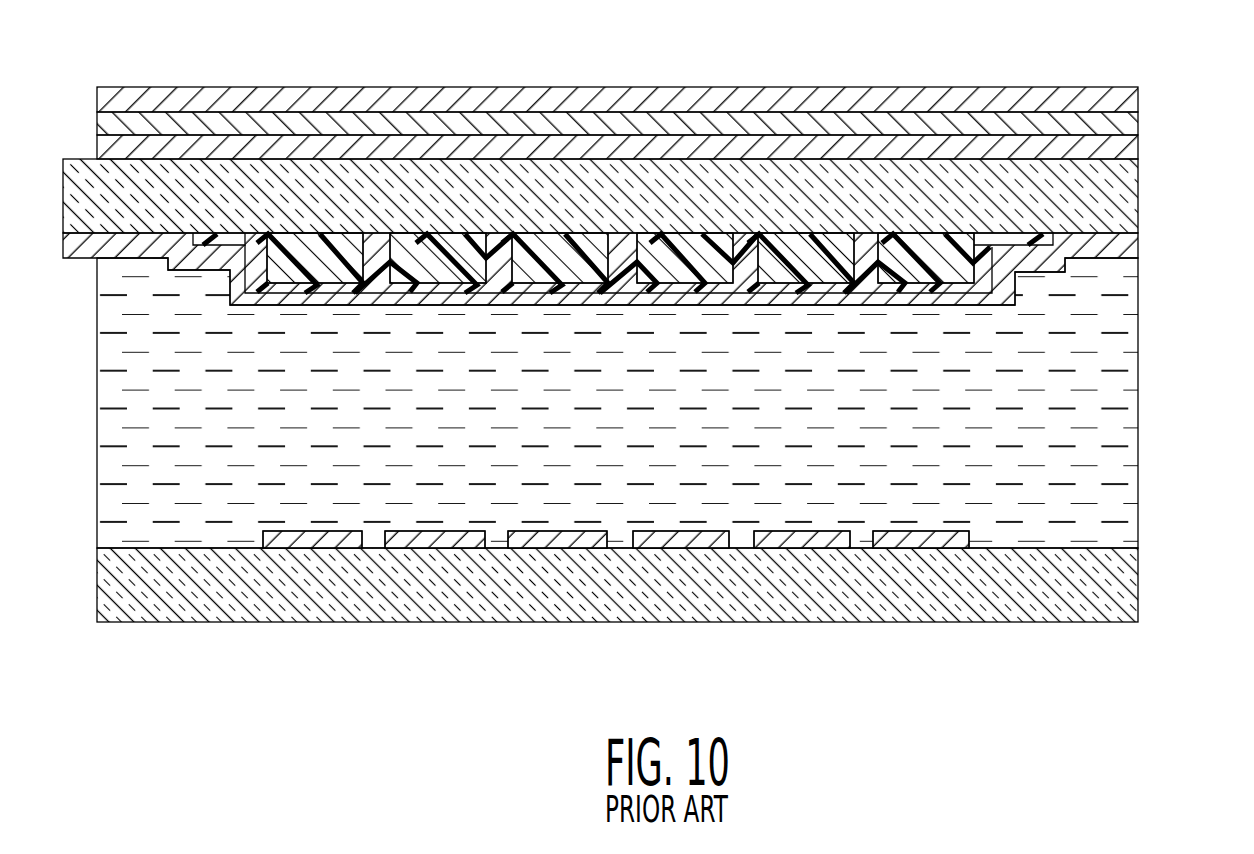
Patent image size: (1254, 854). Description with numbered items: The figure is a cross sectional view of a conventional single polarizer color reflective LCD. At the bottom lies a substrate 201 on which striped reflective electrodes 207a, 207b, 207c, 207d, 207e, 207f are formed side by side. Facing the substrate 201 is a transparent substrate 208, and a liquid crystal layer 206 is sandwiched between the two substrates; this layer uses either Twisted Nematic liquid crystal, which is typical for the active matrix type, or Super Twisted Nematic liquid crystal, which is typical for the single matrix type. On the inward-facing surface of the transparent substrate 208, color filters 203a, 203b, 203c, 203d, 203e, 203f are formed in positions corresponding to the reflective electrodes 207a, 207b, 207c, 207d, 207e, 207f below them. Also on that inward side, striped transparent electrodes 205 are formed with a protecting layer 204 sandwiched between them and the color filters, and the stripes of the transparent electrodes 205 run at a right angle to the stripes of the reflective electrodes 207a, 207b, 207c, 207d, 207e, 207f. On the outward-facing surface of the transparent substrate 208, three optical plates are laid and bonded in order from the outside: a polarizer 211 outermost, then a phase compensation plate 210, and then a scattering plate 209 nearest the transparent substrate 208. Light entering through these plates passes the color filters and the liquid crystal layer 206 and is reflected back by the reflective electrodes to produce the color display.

The substrate 201 is at (1122, 590).
The color filter 203a is at (315, 233).
The color filter 203b is at (455, 233).
The color filter 203c is at (565, 233).
The color filter 203d is at (687, 233).
The color filter 203e is at (808, 233).
The color filter 203f is at (922, 233).
The protecting layer 204 is at (1043, 231).
The striped transparent electrodes 205 is at (1138, 250).
The liquid crystal layer 206 is at (1112, 452).
The reflective electrode 207a is at (317, 545).
The reflective electrode 207b is at (430, 545).
The reflective electrode 207c is at (553, 545).
The reflective electrode 207d is at (678, 545).
The reflective electrode 207e is at (808, 545).
The reflective electrode 207f is at (918, 545).
The transparent substrate 208 is at (1138, 193).
The scattering plate 209 is at (1138, 143).
The phase compensation plate 210 is at (1138, 117).
The polarizer 211 is at (1138, 97).